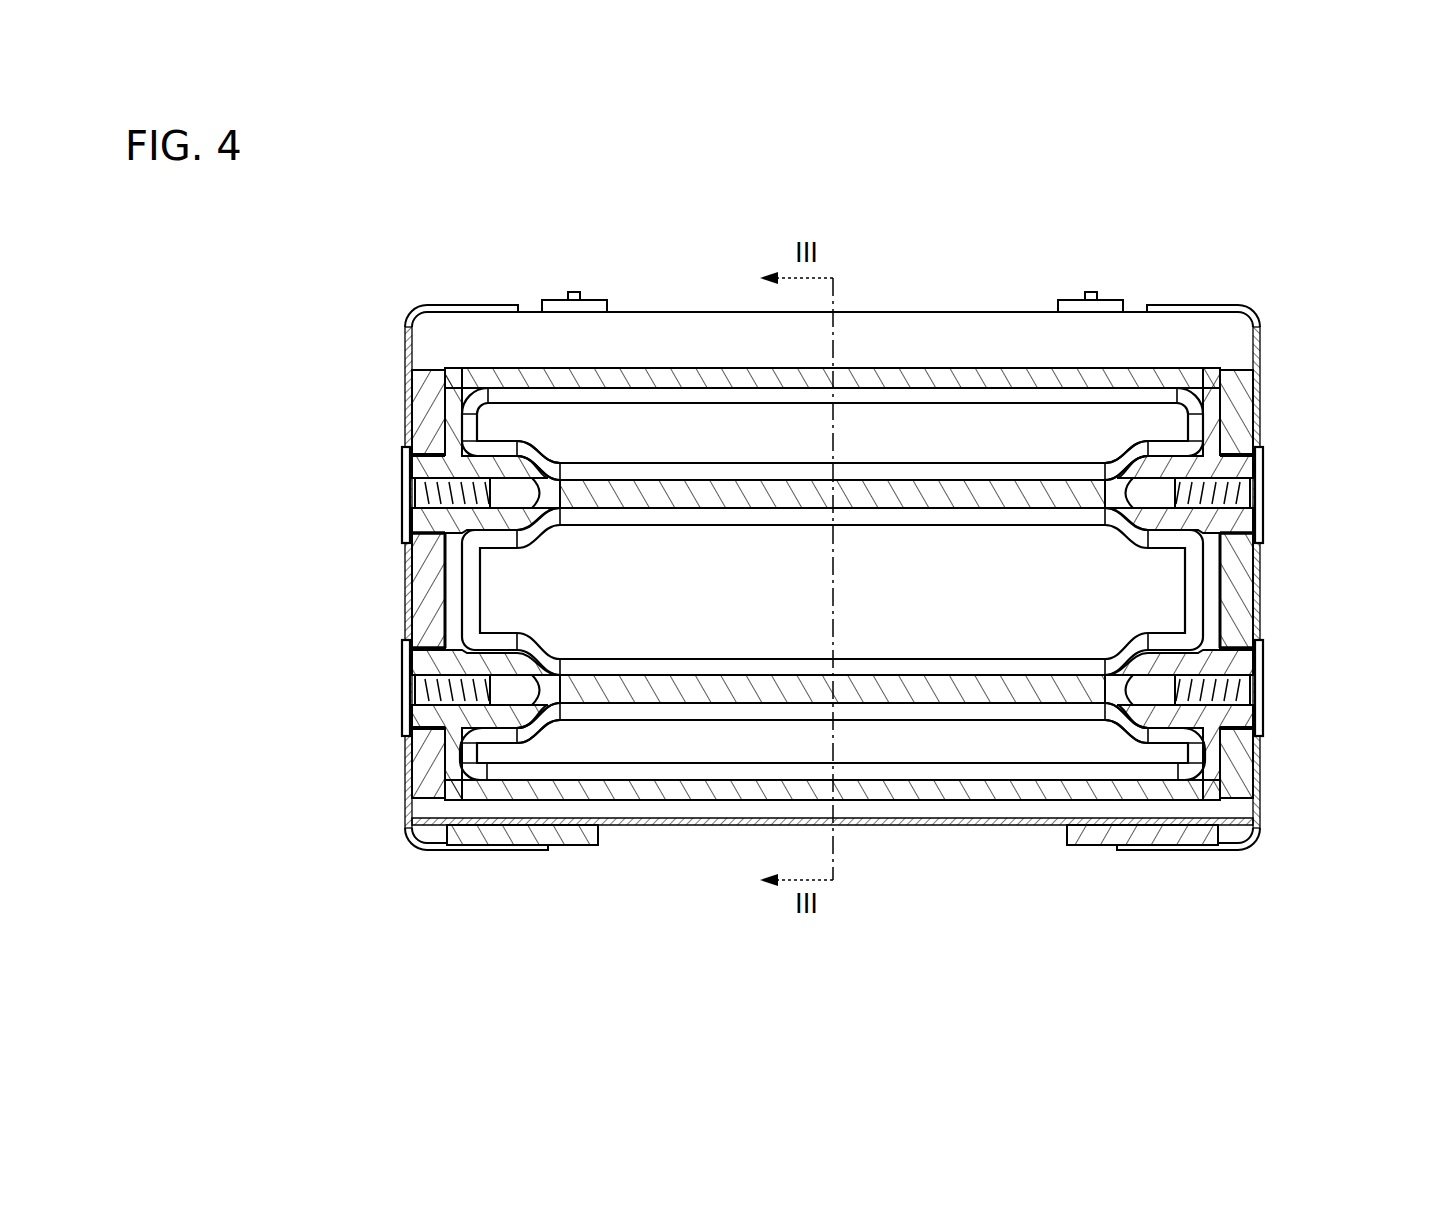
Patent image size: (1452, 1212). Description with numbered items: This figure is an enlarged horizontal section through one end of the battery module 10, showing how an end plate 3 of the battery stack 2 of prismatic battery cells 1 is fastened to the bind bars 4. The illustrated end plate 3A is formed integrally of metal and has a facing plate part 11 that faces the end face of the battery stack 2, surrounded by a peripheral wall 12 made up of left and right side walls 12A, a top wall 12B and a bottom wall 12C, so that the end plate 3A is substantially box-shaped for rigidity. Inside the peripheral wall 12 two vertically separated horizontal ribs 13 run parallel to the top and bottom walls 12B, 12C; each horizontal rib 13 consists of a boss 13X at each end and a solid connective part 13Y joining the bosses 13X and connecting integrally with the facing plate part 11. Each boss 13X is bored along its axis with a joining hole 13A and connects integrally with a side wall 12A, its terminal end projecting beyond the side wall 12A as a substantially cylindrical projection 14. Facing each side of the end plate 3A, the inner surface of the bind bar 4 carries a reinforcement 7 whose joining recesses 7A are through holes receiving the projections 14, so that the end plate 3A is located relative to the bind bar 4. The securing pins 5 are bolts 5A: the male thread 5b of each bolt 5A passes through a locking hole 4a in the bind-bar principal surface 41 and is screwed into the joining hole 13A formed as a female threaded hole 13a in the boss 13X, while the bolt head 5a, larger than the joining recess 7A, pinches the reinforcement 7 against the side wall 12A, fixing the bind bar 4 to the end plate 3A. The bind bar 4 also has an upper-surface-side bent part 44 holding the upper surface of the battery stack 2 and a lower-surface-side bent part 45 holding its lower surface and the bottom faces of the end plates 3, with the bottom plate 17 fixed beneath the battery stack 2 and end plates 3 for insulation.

The prismatic battery cell 1 is at (593, 320).
The battery stack 2 is at (531, 276).
The end plate 3 is at (755, 296).
The end plate 3A is at (438, 341).
The bind bar 4 is at (927, 590).
The locking hole 4a is at (412, 615).
The bind-bar principal surface 41 is at (1258, 590).
The securing pin 5 is at (837, 564).
The bolt 5A is at (837, 564).
The bolt head 5a is at (403, 645).
The male thread 5b is at (403, 695).
The reinforcement 7 is at (445, 596).
The joining recess 7A is at (427, 453).
The battery module 10 is at (781, 503).
The facing plate part 11 is at (802, 606).
The peripheral wall 12 is at (832, 473).
The side wall 12A is at (1040, 208).
The top wall 12B is at (730, 378).
The bottom wall 12C is at (845, 788).
The horizontal rib 13 is at (822, 590).
The joining hole 13A is at (867, 594).
The female threaded hole 13a is at (455, 720).
The boss 13X is at (505, 467).
The connective part 13Y is at (1060, 485).
The projection 14 is at (415, 465).
The bottom plate 17 is at (903, 828).
The upper-surface-side bent part 44 is at (1205, 305).
The lower-surface-side bent part 45 is at (1153, 855).